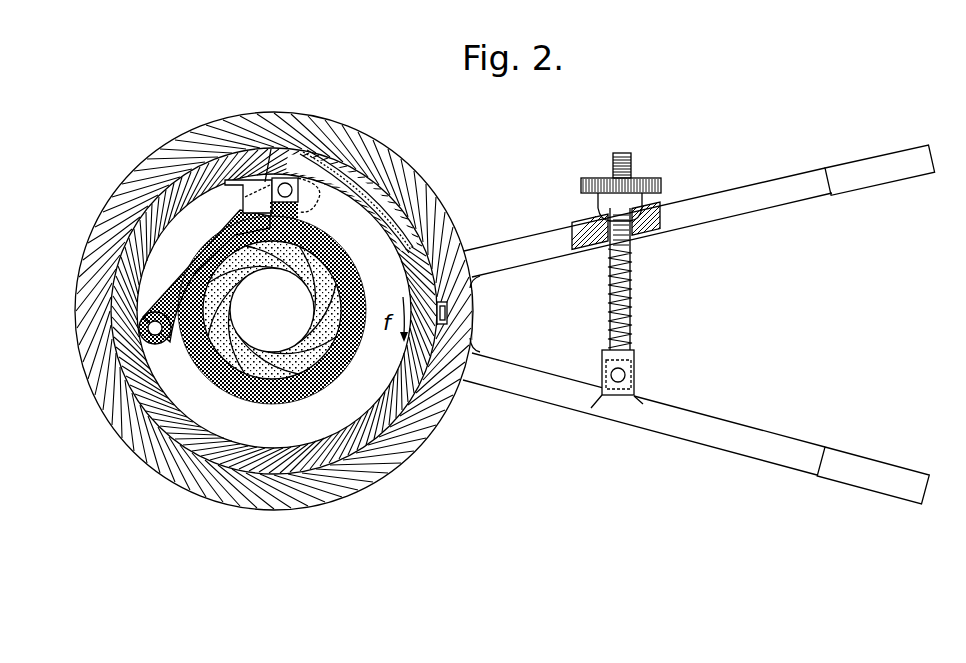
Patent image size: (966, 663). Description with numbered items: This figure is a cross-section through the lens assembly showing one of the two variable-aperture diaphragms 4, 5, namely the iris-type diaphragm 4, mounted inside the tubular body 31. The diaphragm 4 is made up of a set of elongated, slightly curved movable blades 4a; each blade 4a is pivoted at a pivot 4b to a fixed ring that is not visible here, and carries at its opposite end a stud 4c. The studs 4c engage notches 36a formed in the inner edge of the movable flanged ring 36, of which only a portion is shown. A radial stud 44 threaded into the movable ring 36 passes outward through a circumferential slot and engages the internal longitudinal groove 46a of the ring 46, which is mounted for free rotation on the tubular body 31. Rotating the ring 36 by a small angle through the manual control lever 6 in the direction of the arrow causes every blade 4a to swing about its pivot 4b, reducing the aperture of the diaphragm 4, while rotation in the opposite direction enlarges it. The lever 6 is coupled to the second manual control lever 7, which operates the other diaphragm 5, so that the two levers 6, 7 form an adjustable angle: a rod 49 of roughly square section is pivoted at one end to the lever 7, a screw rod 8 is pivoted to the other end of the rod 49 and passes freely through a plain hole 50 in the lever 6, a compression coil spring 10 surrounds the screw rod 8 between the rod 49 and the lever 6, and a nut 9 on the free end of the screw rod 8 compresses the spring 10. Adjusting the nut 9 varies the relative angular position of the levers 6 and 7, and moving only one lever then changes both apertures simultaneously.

The variable-aperture diaphragm 4 is at (212, 378).
The movable blade 4a is at (180, 258).
The pivot 4b is at (155, 336).
The stud 4c is at (331, 152).
The variable-aperture diaphragm 5 is at (247, 362).
The manual control lever 6 is at (789, 188).
The manual control lever 7 is at (768, 452).
The screw rod 8 is at (629, 154).
The nut 9 is at (660, 183).
The compression coil spring 10 is at (633, 298).
The tubular body 31 is at (409, 416).
The movable flanged ring 36 is at (295, 218).
The notch 36a is at (271, 149).
The radial stud 44 is at (457, 320).
The ring 46 is at (445, 221).
The internal longitudinal groove 46a is at (448, 312).
The rod 49 is at (636, 388).
The plain hole 50 is at (636, 232).